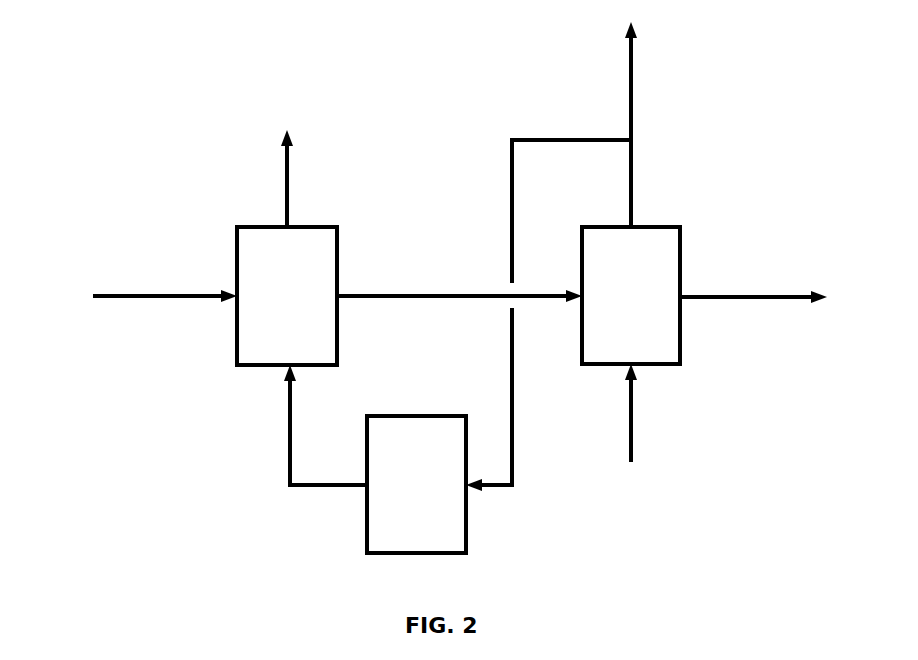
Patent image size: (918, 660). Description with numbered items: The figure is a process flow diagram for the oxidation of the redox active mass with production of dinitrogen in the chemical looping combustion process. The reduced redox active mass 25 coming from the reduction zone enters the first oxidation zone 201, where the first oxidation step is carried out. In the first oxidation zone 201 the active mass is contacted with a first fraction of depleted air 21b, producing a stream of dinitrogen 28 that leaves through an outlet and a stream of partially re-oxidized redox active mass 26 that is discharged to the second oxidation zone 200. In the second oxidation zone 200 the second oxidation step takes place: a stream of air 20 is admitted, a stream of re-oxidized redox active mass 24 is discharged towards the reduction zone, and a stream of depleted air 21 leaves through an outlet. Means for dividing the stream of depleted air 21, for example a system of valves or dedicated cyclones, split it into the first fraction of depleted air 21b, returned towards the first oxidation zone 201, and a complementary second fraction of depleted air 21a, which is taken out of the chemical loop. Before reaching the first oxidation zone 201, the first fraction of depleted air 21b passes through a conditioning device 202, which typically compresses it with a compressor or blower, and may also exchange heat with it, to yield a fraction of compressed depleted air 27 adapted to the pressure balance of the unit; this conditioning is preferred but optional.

The second oxidation zone 200 is at (665, 347).
The first oxidation zone 201 is at (263, 335).
The conditioning device 202 is at (395, 536).
The stream of air 20 is at (633, 422).
The stream of depleted air 21 is at (633, 187).
The second fraction of depleted air 21a is at (633, 83).
The first fraction of depleted air 21b is at (547, 140).
The stream of re-oxidized redox active mass 24 is at (800, 292).
The reduced redox active mass 25 is at (175, 293).
The stream of partially re-oxidized redox active mass 26 is at (480, 294).
The fraction of compressed depleted air 27 is at (288, 465).
The stream of dinitrogen 28 is at (285, 185).